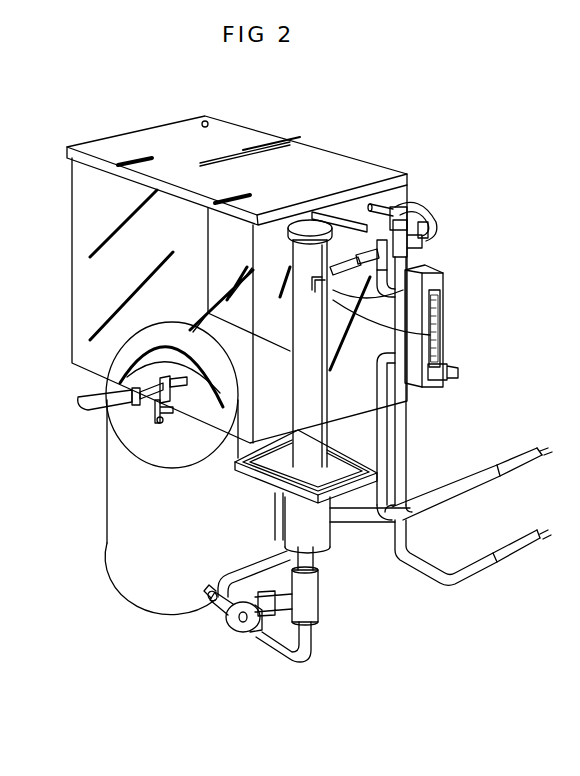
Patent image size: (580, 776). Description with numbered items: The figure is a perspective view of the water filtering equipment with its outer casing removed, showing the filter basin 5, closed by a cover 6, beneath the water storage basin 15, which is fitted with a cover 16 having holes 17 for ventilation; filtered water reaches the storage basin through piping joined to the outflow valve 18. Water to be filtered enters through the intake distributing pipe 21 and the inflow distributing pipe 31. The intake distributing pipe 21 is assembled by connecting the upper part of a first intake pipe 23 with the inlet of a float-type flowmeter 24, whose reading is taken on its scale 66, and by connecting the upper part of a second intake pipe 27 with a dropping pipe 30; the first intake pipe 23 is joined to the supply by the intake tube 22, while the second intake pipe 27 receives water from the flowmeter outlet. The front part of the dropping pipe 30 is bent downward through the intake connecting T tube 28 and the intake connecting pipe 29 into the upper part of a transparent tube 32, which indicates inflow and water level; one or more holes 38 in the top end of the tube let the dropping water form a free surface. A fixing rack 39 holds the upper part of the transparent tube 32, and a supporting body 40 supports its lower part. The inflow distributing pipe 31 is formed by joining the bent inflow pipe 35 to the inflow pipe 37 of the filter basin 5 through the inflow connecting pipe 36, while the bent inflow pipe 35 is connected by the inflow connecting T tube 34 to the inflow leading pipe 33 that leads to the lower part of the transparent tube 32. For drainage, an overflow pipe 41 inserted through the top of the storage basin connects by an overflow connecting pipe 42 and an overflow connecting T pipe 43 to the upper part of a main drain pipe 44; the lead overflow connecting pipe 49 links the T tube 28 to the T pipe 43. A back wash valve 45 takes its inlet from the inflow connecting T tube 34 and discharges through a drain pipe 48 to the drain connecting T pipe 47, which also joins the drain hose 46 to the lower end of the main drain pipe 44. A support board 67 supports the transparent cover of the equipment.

The filter basin 5 is at (113, 481).
The cover 6 is at (120, 432).
The water storage basin 15 is at (80, 287).
The cover 16 is at (297, 143).
The holes 17 is at (373, 172).
The outflow valve 18 is at (80, 401).
The intake distributing pipe 21 is at (508, 272).
The intake tube 22 is at (517, 468).
The first intake pipe 23 is at (380, 407).
The float-type flowmeter 24 is at (456, 368).
The second intake pipe 27 is at (403, 290).
The intake connecting T tube 28 is at (377, 243).
The intake connecting pipe 29 is at (440, 320).
The dropping pipe 30 is at (442, 342).
The inflow distributing pipe 31 is at (250, 665).
The transparent tube 32 is at (292, 380).
The inflow leading pipe 33 is at (315, 565).
The inflow connecting T tube 34 is at (317, 602).
The bent inflow pipe 35 is at (313, 640).
The inflow connecting pipe 36 is at (217, 615).
The inflow pipe 37 is at (210, 590).
The holes 38 is at (310, 224).
The fixing rack 39 is at (353, 223).
The supporting body 40 is at (328, 543).
The overflow pipe 41 is at (400, 210).
The overflow connecting pipe 42 is at (433, 228).
The overflow connecting T pipe 43 is at (420, 247).
The main drain pipe 44 is at (402, 432).
The back wash valve 45 is at (243, 628).
The drain hose 46 is at (523, 547).
The drain connecting T pipe 47 is at (407, 482).
The drain pipe 48 is at (237, 567).
The lead overflow connecting pipe 49 is at (413, 213).
The scale 66 is at (438, 302).
The support board 67 is at (253, 470).